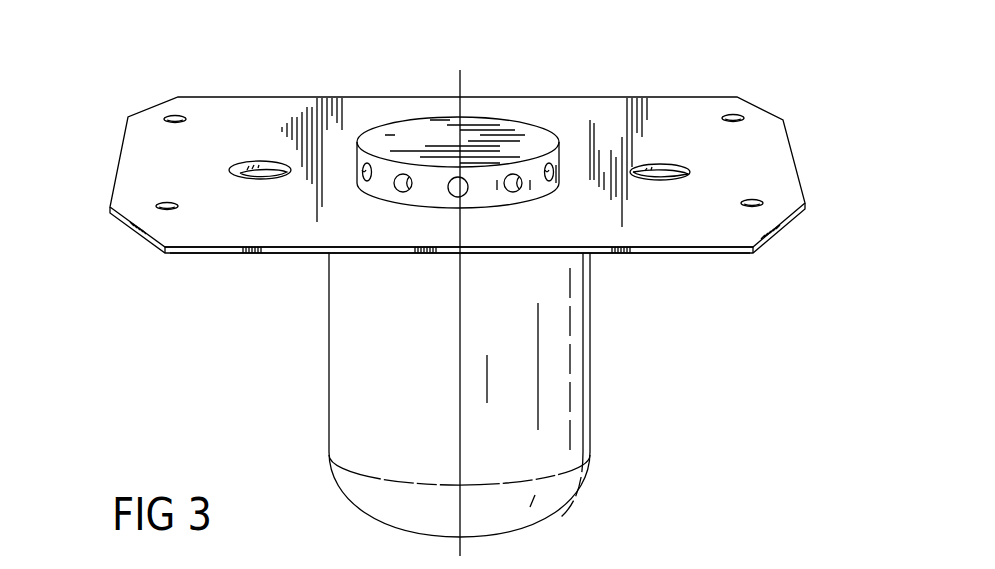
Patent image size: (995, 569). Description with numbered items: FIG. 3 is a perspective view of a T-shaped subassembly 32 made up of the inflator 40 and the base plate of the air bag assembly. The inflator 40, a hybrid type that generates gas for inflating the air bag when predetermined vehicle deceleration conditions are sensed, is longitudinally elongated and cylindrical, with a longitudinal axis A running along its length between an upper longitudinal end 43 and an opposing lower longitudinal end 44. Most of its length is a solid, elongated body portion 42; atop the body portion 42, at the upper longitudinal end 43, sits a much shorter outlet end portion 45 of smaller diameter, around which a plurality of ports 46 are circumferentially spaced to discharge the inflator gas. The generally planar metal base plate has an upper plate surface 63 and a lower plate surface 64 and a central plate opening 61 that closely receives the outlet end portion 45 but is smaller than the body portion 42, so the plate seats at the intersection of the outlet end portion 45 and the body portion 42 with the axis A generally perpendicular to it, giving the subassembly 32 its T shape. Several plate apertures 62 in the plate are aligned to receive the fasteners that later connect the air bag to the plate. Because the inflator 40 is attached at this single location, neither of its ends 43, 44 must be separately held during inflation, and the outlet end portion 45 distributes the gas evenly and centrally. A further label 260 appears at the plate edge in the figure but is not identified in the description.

The longitudinal axis A is at (462, 77).
The T-shaped subassembly 32 is at (771, 107).
The inflator 40 is at (592, 384).
The body portion 42 is at (577, 428).
The upper longitudinal end 43 is at (533, 140).
The lower longitudinal end 44 is at (547, 503).
The outlet end portion 45 is at (388, 130).
The ports 46 is at (456, 178).
The central plate opening 61 is at (362, 177).
The plate apertures 62 is at (172, 120).
The upper plate surface 63 is at (680, 118).
The lower plate surface 64 is at (697, 255).
The plate edge 260 is at (243, 253).